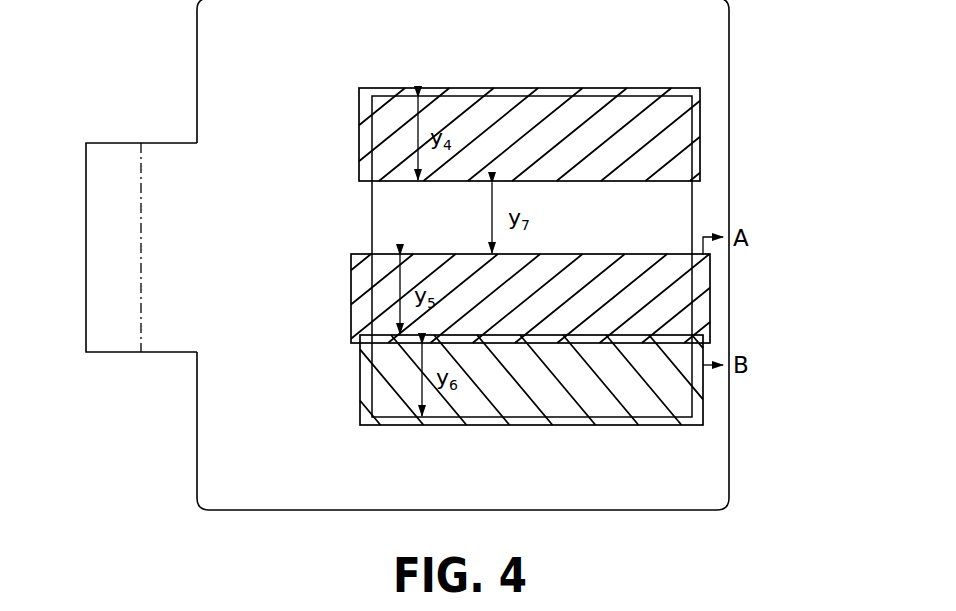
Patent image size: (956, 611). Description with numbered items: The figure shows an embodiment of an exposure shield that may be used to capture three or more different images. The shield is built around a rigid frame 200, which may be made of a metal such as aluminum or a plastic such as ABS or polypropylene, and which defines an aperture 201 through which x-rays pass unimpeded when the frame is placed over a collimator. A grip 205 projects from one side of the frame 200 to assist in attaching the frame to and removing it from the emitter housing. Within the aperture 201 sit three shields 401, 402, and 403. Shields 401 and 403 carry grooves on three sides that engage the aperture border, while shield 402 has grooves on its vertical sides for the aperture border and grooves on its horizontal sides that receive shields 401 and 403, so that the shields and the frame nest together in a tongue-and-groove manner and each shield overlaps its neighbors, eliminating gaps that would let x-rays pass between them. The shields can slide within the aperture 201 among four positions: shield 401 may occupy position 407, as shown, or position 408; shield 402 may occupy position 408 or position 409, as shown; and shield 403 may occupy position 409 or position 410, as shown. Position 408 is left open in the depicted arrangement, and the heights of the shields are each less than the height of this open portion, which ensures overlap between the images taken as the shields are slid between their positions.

The frame 200 is at (729, 28).
The aperture 201 is at (633, 200).
The grip 205 is at (107, 142).
The shield 401 is at (700, 103).
The shield 402 is at (710, 298).
The shield 403 is at (703, 402).
The position 407 is at (343, 88).
The position 408 is at (343, 181).
The position 409 is at (343, 254).
The position 410 is at (343, 335).